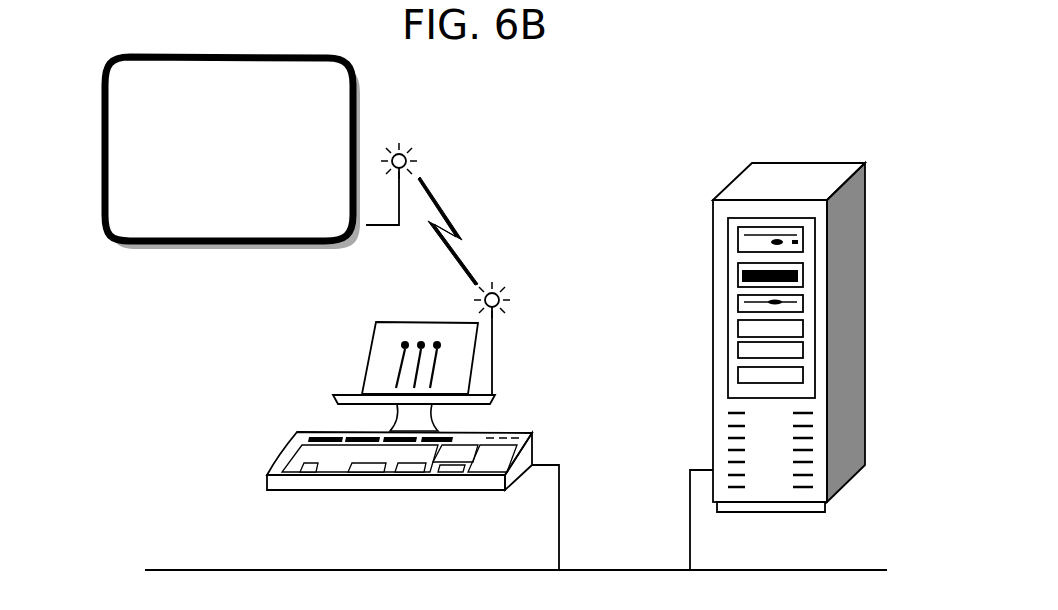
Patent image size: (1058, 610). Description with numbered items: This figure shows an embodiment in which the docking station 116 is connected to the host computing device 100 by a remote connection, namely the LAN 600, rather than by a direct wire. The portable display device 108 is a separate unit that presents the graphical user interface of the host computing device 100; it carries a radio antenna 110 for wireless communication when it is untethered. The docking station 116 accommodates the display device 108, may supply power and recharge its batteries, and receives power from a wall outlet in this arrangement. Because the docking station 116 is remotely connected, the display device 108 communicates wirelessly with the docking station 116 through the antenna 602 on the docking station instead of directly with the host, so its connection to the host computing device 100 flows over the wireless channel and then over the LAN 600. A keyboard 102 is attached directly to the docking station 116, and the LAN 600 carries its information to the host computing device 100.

The host computing device 100 is at (790, 183).
The keyboard 102 is at (275, 463).
The display device 108 is at (100, 210).
The radio antenna 110 is at (408, 144).
The docking station 116 is at (356, 393).
The LAN 600 is at (637, 567).
The antenna 602 is at (498, 278).